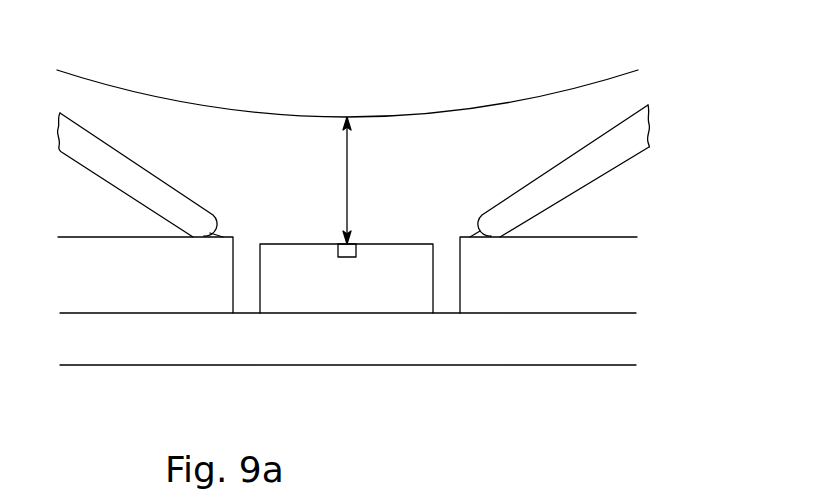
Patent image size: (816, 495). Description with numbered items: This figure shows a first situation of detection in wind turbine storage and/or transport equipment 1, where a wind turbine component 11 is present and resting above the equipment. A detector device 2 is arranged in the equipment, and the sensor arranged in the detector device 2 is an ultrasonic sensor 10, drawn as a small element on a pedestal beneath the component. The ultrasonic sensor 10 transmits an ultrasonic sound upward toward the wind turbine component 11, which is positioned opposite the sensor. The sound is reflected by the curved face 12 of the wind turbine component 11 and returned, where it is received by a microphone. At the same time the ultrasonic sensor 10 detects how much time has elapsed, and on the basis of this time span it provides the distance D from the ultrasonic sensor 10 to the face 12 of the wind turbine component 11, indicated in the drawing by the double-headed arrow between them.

The wind turbine storage and/or transport equipment 1 is at (590, 237).
The detector device 2 is at (401, 295).
The ultrasonic sensor 10 is at (356, 244).
The wind turbine component 11 is at (510, 102).
The face of the wind turbine component 12 is at (310, 117).
The distance D is at (347, 183).